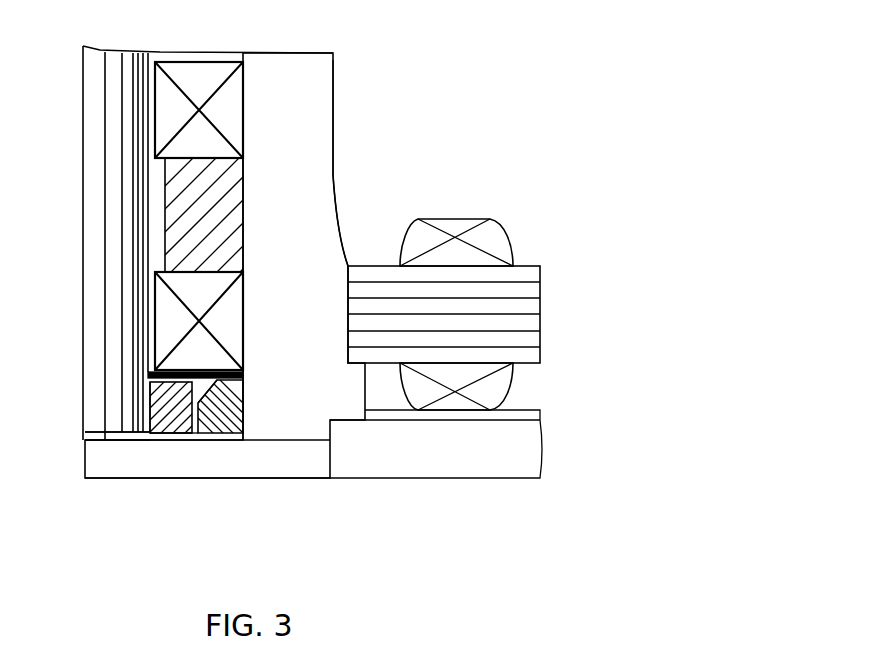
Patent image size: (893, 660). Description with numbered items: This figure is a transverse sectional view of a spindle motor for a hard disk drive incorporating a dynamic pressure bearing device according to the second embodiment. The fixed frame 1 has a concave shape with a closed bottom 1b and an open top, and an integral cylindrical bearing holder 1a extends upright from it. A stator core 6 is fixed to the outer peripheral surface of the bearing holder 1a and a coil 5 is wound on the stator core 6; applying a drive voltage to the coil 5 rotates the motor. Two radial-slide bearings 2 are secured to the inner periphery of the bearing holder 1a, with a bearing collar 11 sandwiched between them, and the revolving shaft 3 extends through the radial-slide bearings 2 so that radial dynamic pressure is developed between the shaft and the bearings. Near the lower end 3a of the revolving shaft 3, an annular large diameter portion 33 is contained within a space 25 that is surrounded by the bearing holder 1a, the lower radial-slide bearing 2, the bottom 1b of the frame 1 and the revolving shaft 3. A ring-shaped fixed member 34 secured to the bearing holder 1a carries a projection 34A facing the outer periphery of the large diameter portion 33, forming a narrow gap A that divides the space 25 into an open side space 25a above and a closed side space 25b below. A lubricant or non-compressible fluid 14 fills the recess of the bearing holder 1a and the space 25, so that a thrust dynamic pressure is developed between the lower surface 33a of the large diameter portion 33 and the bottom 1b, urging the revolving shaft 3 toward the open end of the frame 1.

The frame 1 is at (322, 480).
The bearing holder 1a is at (320, 172).
The bottom of the frame 1b is at (84, 465).
The radial-slide bearing 2 is at (204, 75).
The revolving shaft 3 is at (93, 172).
The lower end of the revolving shaft 3a is at (87, 434).
The coil 5 is at (498, 224).
The stator core 6 is at (528, 324).
The bearing collar 11 is at (170, 218).
The lubricant or non-compressible fluid 14 is at (170, 372).
The space 25 is at (252, 370).
The open side space 25a is at (150, 395).
The closed side space 25b is at (195, 412).
The annular large diameter portion 33 is at (161, 436).
The surface of the large diameter portion 33a is at (150, 436).
The ring-shaped fixed member 34 is at (243, 440).
The projection 34A is at (207, 412).
The narrow gap A is at (150, 413).